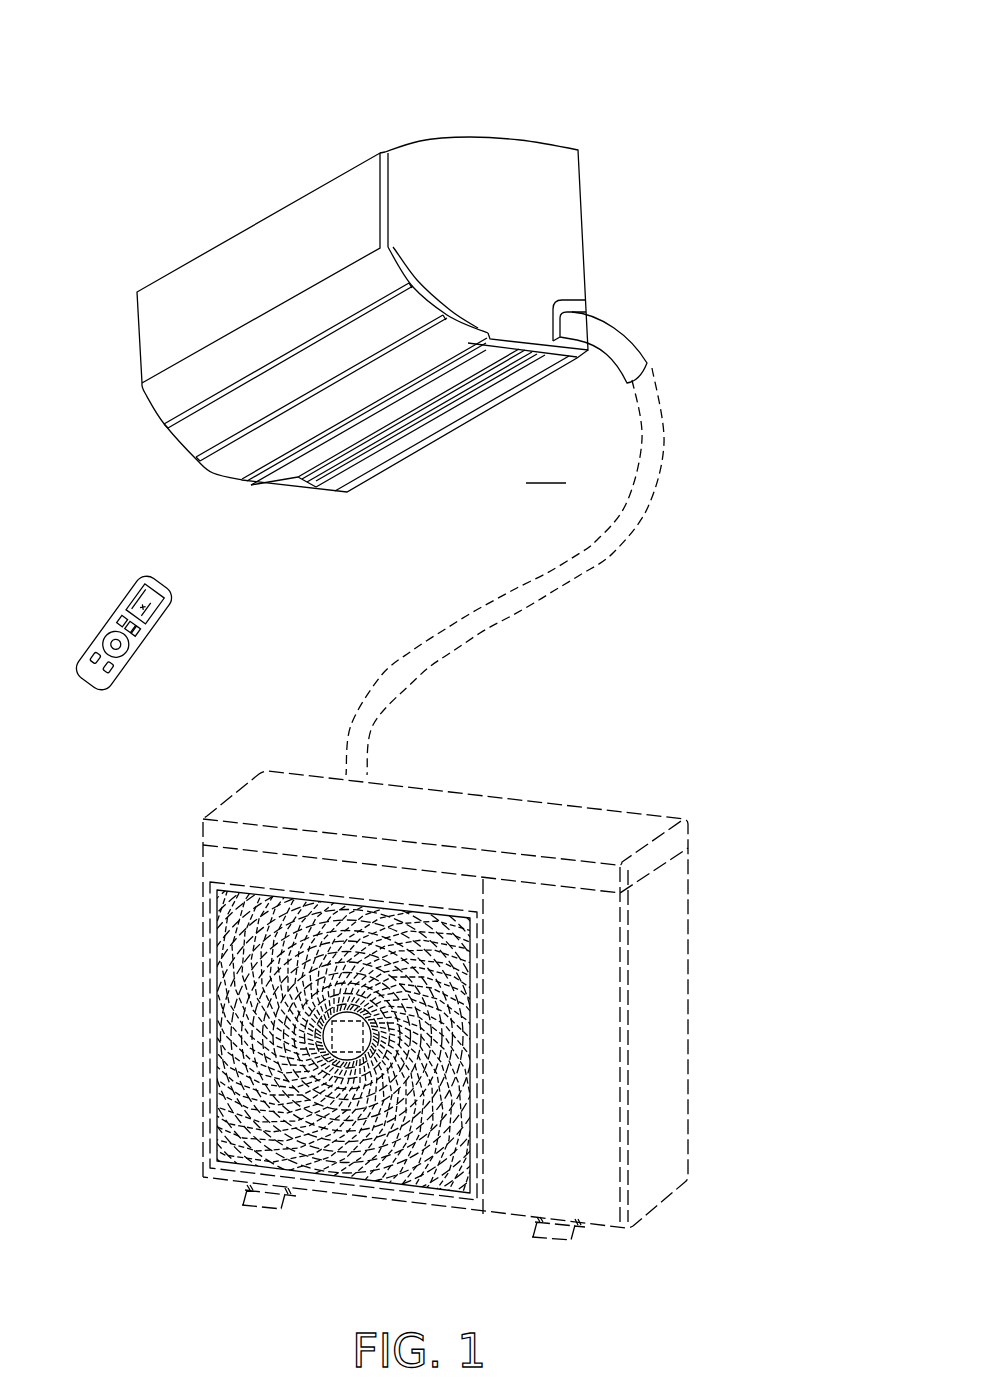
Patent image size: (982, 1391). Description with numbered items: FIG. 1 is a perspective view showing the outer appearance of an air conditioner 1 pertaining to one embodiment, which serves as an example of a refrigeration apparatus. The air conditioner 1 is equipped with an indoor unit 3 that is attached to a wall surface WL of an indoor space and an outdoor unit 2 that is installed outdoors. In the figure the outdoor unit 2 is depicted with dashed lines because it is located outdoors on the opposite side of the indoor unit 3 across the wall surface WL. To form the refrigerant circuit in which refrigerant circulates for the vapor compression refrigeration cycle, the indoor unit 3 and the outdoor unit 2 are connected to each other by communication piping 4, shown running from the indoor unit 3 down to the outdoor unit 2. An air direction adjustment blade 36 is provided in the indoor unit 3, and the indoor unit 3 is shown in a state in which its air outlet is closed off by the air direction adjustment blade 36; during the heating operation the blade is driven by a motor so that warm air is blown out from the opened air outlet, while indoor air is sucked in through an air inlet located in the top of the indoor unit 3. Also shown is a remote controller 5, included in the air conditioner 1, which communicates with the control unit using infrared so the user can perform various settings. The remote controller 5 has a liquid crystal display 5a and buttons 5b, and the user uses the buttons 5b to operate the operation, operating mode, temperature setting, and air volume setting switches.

The air conditioner 1 is at (668, 83).
The outdoor unit 2 is at (587, 800).
The indoor unit 3 is at (610, 225).
The communication piping 4 is at (628, 340).
The remote controller 5 is at (170, 597).
The liquid crystal display 5a is at (145, 608).
The buttons 5b is at (132, 653).
The air direction adjustment blade 36 is at (258, 450).
The wall surface WL is at (548, 469).